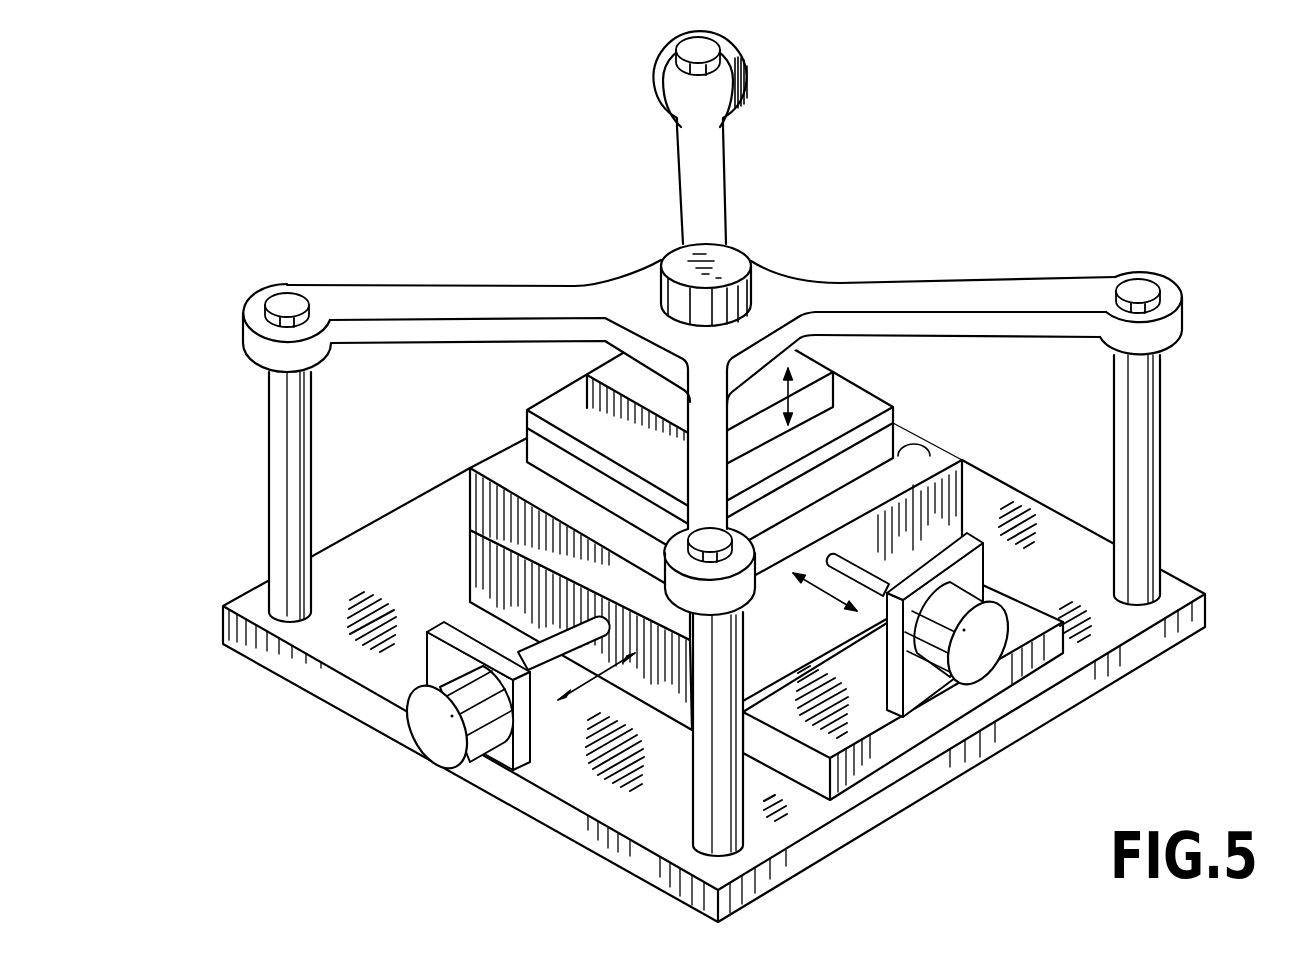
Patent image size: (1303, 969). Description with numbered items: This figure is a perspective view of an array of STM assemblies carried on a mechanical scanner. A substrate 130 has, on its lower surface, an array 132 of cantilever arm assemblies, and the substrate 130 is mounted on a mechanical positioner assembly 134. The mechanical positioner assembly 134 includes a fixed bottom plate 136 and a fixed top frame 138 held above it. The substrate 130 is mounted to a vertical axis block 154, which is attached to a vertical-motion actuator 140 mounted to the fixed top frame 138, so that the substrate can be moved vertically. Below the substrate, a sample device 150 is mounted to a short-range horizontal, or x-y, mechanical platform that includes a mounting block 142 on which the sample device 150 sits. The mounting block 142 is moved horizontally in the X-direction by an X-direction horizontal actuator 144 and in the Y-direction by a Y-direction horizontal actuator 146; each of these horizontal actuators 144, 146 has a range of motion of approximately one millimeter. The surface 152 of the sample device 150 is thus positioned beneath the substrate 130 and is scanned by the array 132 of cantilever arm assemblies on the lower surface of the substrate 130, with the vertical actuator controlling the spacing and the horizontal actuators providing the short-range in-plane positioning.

The substrate 130 is at (863, 403).
The array 132 is at (905, 450).
The mechanical positioner assembly 134 is at (995, 181).
The fixed bottom plate 136 is at (307, 667).
The fixed top frame 138 is at (397, 298).
The vertical-motion actuator 140 is at (728, 265).
The mounting block 142 is at (470, 522).
The X-direction horizontal actuator 144 is at (977, 645).
The Y-direction horizontal actuator 146 is at (440, 733).
The sample device 150 is at (557, 468).
The surface 152 is at (527, 433).
The vertical axis block 154 is at (583, 387).